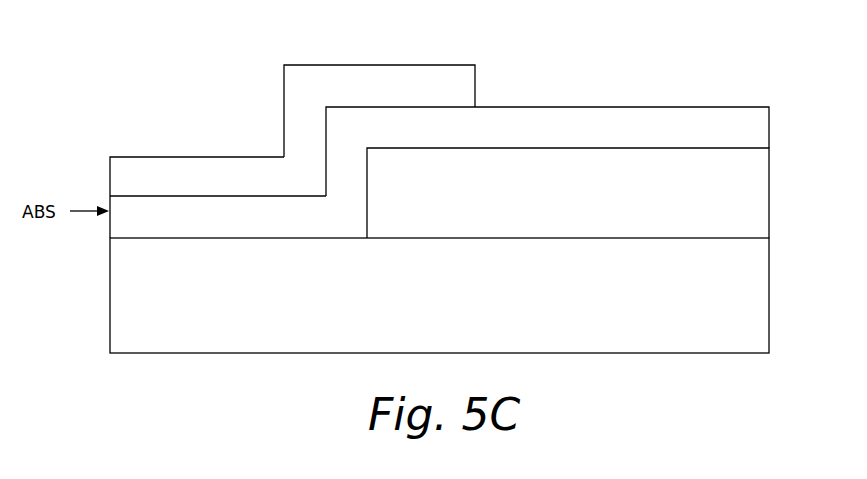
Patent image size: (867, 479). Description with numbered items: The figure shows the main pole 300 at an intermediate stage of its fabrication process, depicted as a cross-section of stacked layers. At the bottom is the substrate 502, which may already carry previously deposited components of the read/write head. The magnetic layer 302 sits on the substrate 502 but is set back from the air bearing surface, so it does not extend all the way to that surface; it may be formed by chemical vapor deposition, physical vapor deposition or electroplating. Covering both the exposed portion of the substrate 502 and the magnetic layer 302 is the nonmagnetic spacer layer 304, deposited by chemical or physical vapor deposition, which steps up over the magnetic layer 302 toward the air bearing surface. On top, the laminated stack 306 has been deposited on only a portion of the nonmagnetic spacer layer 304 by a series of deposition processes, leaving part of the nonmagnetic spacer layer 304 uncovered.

The main pole 300 is at (153, 63).
The laminated stack 306 is at (396, 97).
The nonmagnetic spacer layer 304 is at (564, 139).
The magnetic layer 302 is at (564, 202).
The substrate 502 is at (564, 301).